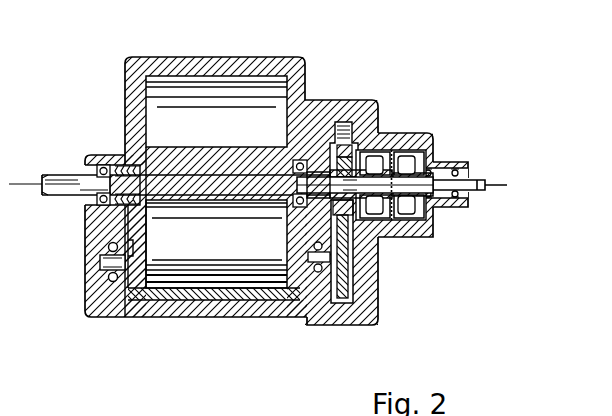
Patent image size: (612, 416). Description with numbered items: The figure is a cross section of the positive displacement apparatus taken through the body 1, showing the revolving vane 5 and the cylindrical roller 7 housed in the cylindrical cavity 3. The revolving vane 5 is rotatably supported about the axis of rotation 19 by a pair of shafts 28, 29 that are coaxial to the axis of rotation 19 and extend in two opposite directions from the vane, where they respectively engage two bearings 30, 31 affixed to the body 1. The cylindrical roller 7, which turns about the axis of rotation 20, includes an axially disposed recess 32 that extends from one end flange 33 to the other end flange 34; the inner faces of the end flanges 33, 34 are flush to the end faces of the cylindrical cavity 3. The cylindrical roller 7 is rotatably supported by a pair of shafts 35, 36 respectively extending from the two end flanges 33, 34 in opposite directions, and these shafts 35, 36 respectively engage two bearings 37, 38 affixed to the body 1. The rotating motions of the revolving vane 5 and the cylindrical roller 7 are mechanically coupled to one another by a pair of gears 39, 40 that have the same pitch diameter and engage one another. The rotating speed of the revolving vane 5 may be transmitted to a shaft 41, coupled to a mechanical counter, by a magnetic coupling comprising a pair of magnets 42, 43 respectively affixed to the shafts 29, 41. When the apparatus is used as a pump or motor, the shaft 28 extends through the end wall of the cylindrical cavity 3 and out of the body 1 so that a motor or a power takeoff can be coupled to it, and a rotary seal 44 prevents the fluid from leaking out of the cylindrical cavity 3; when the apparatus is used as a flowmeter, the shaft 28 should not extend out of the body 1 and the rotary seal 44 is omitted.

The body 1 is at (148, 62).
The cylindrical cavity 3 is at (233, 122).
The revolving vane 5 is at (181, 233).
The cylindrical roller 7 is at (215, 306).
The axis of rotation 19 is at (198, 188).
The axis of rotation 20 is at (201, 262).
The shaft 28 is at (60, 177).
The shaft 29 is at (320, 100).
The bearing 30 is at (97, 162).
The bearing 31 is at (313, 100).
The axially disposed recess 32 is at (245, 288).
The end flange 33 is at (116, 298).
The end flange 34 is at (297, 322).
The shaft 35 is at (108, 246).
The shaft 36 is at (358, 290).
The bearing 37 is at (108, 278).
The bearing 38 is at (306, 302).
The gear 39 is at (376, 100).
The gear 40 is at (357, 243).
The shaft 41 is at (476, 200).
The magnet 42 is at (390, 133).
The magnet 43 is at (405, 238).
The rotary seal 44 is at (118, 167).